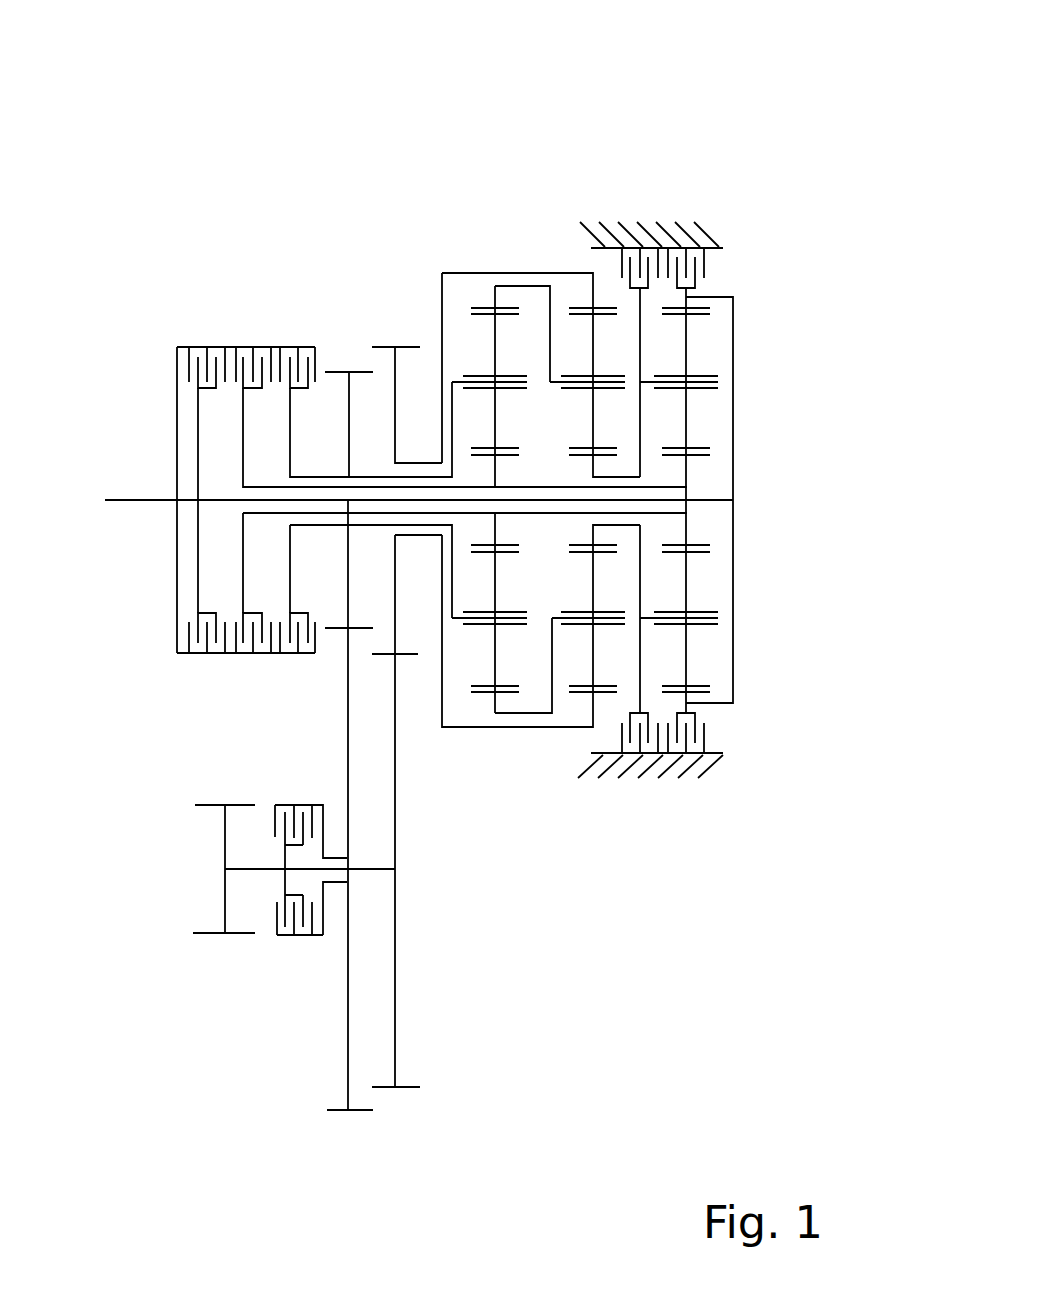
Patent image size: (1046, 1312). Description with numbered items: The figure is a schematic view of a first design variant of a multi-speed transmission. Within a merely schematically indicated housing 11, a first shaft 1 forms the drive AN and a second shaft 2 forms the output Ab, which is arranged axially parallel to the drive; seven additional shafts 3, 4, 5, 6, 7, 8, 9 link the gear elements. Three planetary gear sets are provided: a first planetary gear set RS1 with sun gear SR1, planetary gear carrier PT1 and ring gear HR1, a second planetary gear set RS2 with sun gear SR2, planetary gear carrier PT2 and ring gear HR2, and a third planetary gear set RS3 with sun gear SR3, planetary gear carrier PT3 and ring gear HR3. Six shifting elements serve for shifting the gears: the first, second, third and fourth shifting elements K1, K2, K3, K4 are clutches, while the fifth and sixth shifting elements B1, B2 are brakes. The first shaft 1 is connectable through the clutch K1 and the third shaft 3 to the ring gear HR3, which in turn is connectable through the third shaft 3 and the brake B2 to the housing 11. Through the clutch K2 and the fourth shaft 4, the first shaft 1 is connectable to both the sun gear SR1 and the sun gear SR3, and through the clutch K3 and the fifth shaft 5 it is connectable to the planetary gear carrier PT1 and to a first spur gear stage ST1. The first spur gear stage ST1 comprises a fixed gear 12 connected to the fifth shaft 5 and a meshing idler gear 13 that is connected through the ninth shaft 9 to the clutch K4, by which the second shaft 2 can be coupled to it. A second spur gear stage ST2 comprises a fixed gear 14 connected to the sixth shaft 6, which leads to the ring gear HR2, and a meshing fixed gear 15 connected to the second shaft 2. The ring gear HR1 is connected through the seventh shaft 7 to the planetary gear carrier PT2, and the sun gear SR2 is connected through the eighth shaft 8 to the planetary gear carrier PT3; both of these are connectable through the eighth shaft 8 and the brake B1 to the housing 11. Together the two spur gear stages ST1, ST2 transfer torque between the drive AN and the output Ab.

The first shaft 1 is at (167, 502).
The second shaft 2 is at (263, 873).
The third shaft 3 is at (198, 462).
The fourth shaft 4 is at (243, 428).
The fifth shaft 5 is at (293, 403).
The sixth shaft 6 is at (442, 695).
The seventh shaft 7 is at (553, 650).
The eighth shaft 8 is at (640, 410).
The ninth shaft 9 is at (325, 908).
The housing 11 is at (703, 240).
The fixed gear 12 is at (347, 595).
The idler gear 13 is at (352, 1087).
The fixed gear 14 is at (395, 630).
The fixed gear 15 is at (400, 1017).
The drive AN is at (137, 500).
The output Ab is at (223, 845).
The first shifting element K1 is at (203, 337).
The second shifting element K2 is at (252, 337).
The third shifting element K3 is at (300, 337).
The fourth shifting element K4 is at (292, 945).
The fifth shifting element B1 is at (637, 800).
The sixth shifting element B2 is at (685, 800).
The first spur gear stage ST1 is at (348, 350).
The second spur gear stage ST2 is at (395, 330).
The first planetary gear set RS1 is at (495, 260).
The second planetary gear set RS2 is at (638, 212).
The third planetary gear set RS3 is at (685, 212).
The ring gear of the first planetary gear set HR1 is at (497, 305).
The ring gear of the second planetary gear set HR2 is at (593, 305).
The ring gear of the third planetary gear set HR3 is at (710, 296).
The planetary gear carrier of the first planetary gear set PT1 is at (477, 363).
The planetary gear carrier of the second planetary gear set PT2 is at (575, 363).
The planetary gear carrier of the third planetary gear set PT3 is at (708, 367).
The sun gear of the first planetary gear set SR1 is at (552, 375).
The sun gear of the second planetary gear set SR2 is at (690, 463).
The sun gear of the third planetary gear set SR3 is at (593, 463).